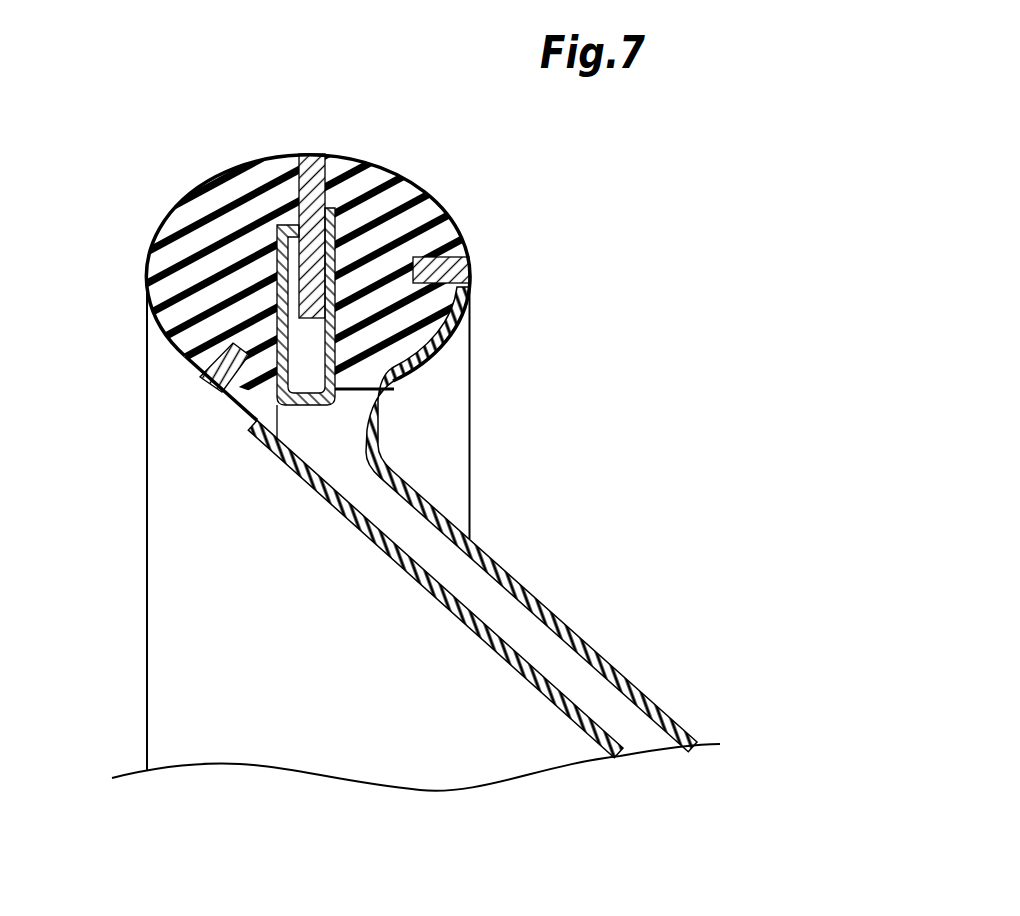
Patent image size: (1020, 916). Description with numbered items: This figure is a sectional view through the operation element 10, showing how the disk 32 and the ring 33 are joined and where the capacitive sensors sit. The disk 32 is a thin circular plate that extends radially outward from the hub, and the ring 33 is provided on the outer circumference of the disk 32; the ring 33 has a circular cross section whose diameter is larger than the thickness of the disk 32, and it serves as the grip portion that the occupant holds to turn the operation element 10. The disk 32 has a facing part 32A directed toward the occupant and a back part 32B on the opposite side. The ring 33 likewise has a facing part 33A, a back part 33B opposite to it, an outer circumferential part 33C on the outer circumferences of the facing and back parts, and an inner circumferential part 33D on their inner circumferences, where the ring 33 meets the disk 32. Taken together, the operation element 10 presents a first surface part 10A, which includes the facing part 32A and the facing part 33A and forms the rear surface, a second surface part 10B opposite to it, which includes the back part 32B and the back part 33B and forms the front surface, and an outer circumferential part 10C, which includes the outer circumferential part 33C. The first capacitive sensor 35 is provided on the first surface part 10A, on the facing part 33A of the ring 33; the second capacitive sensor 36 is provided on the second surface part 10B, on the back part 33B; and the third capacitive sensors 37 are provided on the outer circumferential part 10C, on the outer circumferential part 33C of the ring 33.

The operation element 10 is at (624, 294).
The first surface part 10A is at (175, 452).
The second surface part 10B is at (517, 557).
The outer circumferential part 10C is at (187, 164).
The disk 32 is at (572, 631).
The facing part 32A is at (518, 673).
The back part 32B is at (630, 682).
The ring 33 is at (402, 190).
The facing part 33A is at (152, 246).
The back part 33B is at (462, 240).
The outer circumferential part 33C is at (312, 155).
The inner circumferential part 33D is at (257, 428).
The first capacitive sensor 35 is at (203, 380).
The second capacitive sensor 36 is at (470, 272).
The third capacitive sensors 37 is at (299, 195).